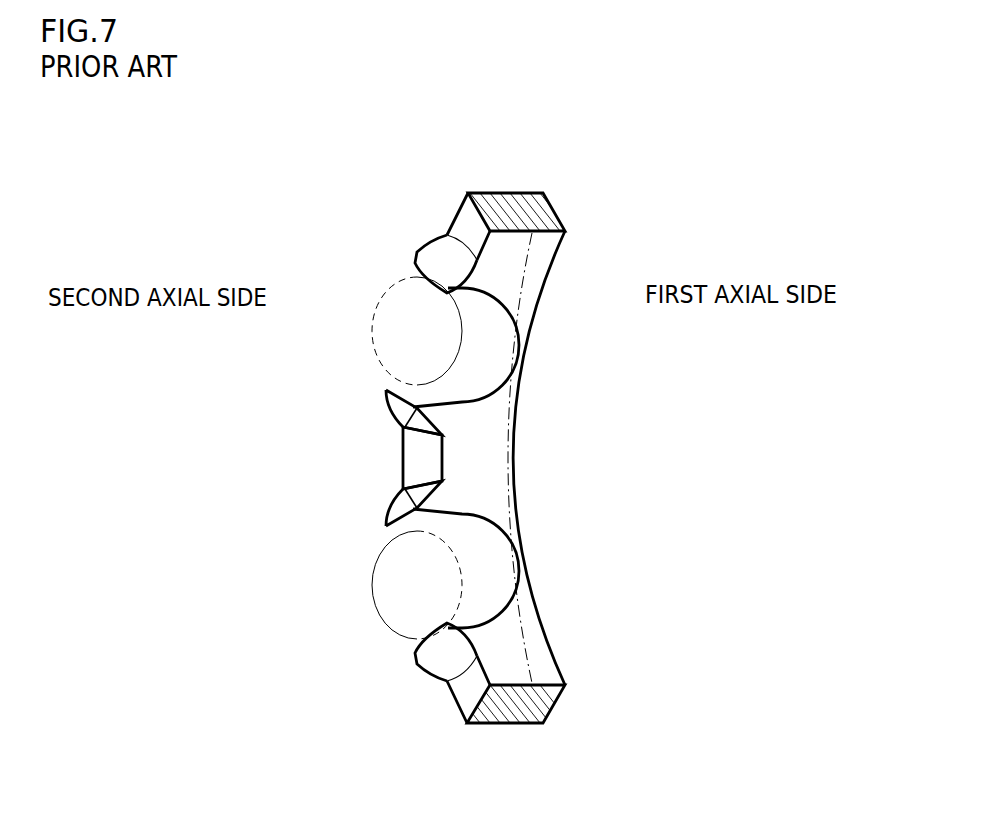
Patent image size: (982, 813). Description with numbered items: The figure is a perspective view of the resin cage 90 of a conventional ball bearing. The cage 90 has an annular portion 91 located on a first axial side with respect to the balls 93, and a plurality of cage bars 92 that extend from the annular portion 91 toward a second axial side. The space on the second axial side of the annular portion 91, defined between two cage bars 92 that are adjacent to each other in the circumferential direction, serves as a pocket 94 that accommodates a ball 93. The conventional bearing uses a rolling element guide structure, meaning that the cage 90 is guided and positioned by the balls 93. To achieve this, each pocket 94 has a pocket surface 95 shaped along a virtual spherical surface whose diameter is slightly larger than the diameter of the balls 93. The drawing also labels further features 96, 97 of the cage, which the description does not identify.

The cage 90 is at (458, 202).
The annular portion 91 is at (518, 552).
The cage bar 92 is at (503, 242).
The ball 93 is at (392, 273).
The pocket 94 is at (410, 322).
The pocket surface 95 is at (472, 357).
The roller guide surface 96 is at (430, 257).
The roller retaining projection 97 is at (420, 248).